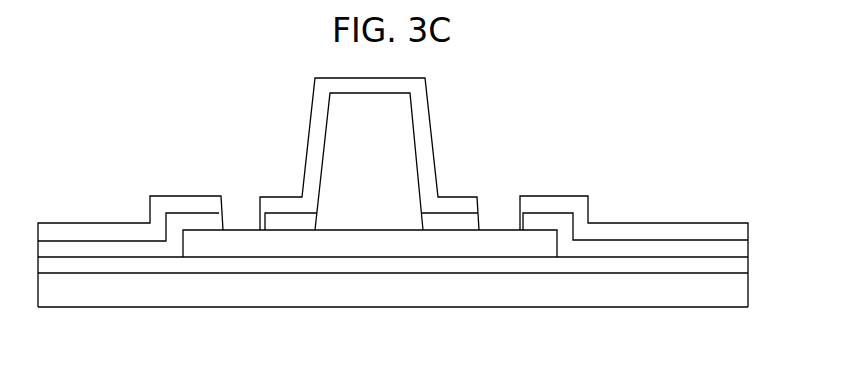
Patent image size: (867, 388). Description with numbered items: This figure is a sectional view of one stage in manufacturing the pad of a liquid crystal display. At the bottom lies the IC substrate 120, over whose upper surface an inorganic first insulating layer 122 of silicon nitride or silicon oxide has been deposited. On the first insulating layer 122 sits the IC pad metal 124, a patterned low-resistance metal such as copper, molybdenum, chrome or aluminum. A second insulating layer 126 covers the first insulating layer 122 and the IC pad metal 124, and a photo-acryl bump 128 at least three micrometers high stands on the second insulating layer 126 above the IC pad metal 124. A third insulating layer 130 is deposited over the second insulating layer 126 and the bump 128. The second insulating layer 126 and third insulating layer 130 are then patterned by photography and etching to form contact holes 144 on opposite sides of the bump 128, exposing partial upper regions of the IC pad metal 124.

The IC substrate 120 is at (740, 291).
The first insulating layer 122 is at (740, 270).
The IC pad metal 124 is at (540, 245).
The second insulating layer 126 is at (740, 252).
The bump 128 is at (400, 125).
The third insulating layer 130 is at (740, 231).
The contact holes 144 is at (238, 200).